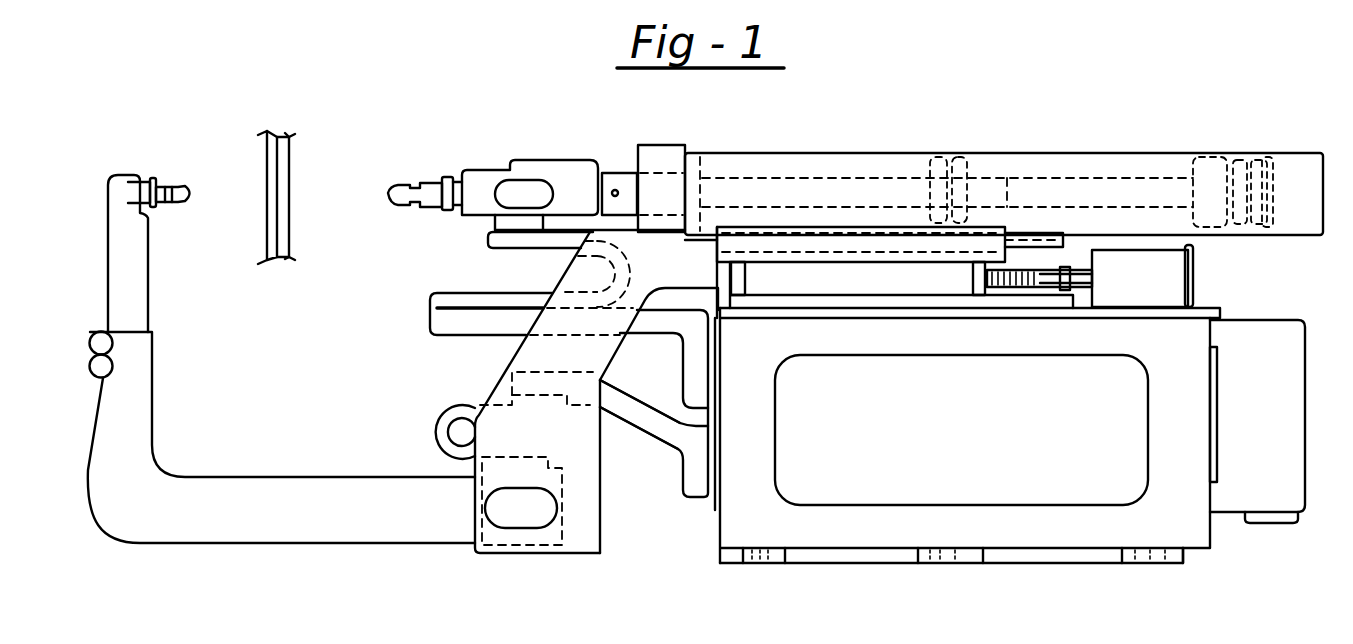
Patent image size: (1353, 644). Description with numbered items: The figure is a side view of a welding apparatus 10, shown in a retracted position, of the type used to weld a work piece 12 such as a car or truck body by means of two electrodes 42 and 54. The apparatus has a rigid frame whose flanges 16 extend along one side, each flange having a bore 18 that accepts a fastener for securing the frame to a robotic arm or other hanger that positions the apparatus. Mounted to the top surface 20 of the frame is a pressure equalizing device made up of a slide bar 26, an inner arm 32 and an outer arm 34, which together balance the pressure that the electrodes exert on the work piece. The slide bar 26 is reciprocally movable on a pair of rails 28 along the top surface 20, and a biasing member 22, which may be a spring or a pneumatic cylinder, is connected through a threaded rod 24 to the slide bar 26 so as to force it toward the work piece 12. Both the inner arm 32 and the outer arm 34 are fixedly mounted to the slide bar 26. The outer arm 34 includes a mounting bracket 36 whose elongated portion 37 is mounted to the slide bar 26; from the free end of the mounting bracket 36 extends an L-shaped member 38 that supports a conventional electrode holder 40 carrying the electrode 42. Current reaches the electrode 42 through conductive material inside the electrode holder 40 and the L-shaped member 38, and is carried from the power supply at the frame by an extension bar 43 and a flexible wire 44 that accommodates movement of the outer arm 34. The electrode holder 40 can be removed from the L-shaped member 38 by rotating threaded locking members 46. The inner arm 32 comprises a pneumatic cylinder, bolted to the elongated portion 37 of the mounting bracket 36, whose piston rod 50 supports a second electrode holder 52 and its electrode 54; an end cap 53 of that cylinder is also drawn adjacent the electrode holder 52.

The welding apparatus 10 is at (660, 550).
The work piece 12 is at (292, 168).
The flanges 16 is at (772, 565).
The bore 18 is at (748, 567).
The top surface 20 is at (1111, 309).
The biasing member 22 is at (1180, 280).
The threaded rod 24 is at (1067, 255).
The slide bar 26 is at (908, 278).
The rails 28 is at (790, 302).
The inner arm 32 is at (929, 137).
The outer arm 34 is at (388, 439).
The mounting bracket 36 is at (540, 353).
The elongated portion 37 is at (788, 236).
The L-shaped member 38 is at (270, 490).
The electrode holder 40 is at (128, 298).
The electrode 42 is at (173, 186).
The extension bar 43 is at (625, 407).
The wire 44 is at (443, 428).
The threaded locking members 46 is at (107, 343).
The piston rod 50 is at (740, 180).
The electrode holder 52 is at (592, 167).
The end cap 53 is at (663, 148).
The electrode 54 is at (432, 178).